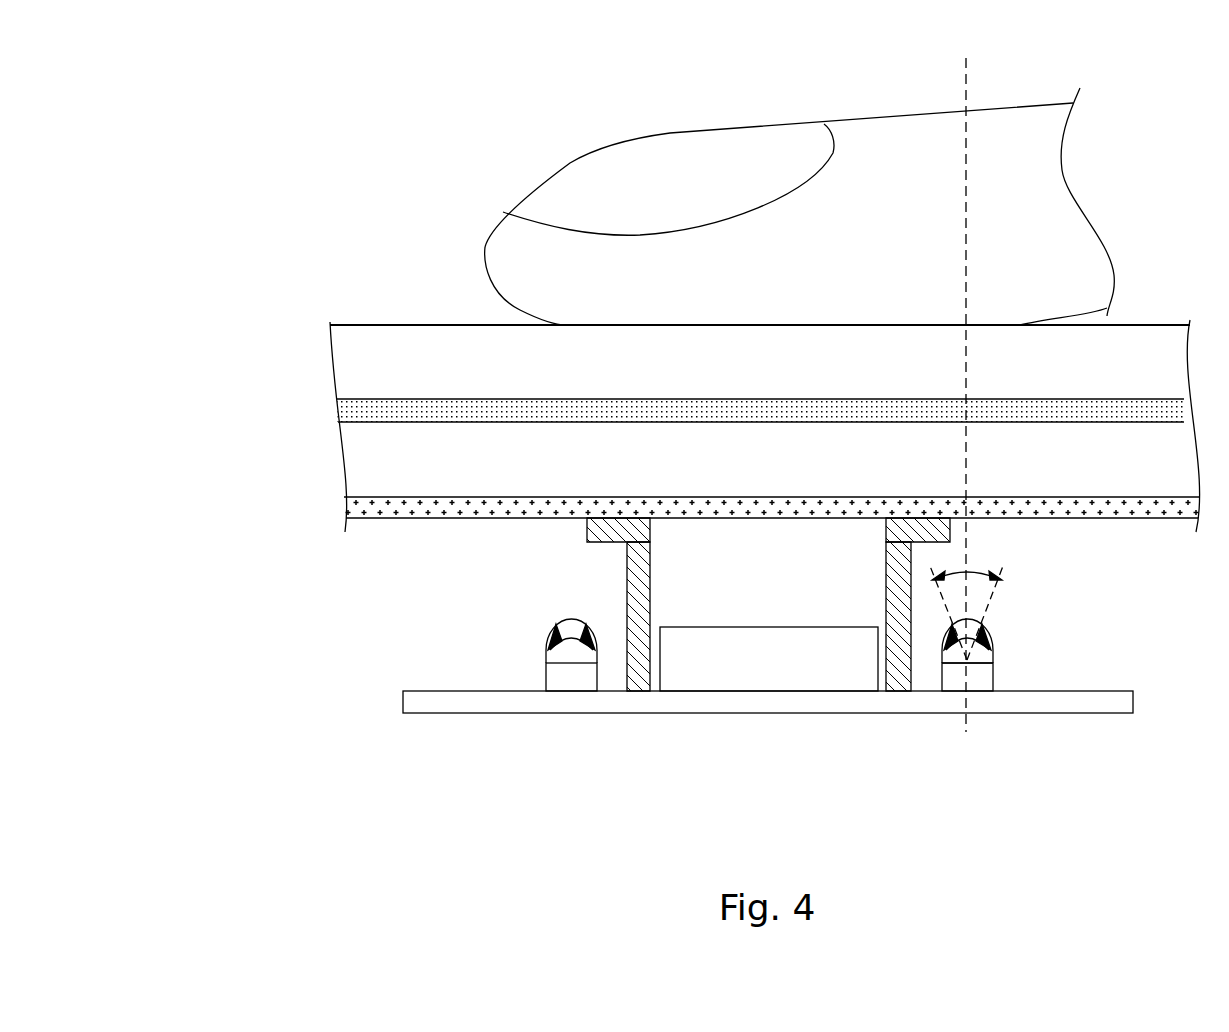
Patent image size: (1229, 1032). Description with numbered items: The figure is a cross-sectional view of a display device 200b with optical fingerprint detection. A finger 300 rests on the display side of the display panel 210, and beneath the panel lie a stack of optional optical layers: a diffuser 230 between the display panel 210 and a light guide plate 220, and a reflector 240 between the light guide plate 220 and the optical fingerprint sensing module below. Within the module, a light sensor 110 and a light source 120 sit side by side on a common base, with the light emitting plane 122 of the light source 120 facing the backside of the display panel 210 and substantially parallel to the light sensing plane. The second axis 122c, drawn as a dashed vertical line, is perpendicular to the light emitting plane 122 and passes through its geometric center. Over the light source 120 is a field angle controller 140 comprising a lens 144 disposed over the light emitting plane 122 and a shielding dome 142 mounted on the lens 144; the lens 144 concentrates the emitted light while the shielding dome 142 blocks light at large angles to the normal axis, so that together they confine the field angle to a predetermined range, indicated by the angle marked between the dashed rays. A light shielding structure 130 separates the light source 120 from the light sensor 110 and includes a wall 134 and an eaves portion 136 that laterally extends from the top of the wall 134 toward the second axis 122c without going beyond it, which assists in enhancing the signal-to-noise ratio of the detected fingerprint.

The display device 200b is at (701, 401).
The light sensor 110 is at (710, 678).
The light source 120 is at (957, 678).
The light emitting plane 122 is at (980, 665).
The second axis 122c is at (966, 88).
The light shielding structure 130 is at (868, 604).
The wall 134 is at (902, 594).
The eaves portion 136 is at (940, 530).
The field angle controller 140 is at (860, 651).
The shielding dome 142 is at (980, 638).
The lens 144 is at (980, 663).
The display panel 210 is at (342, 362).
The light guide plate 220 is at (362, 462).
The diffuser 230 is at (350, 409).
The reflector 240 is at (357, 507).
The finger 300 is at (903, 138).